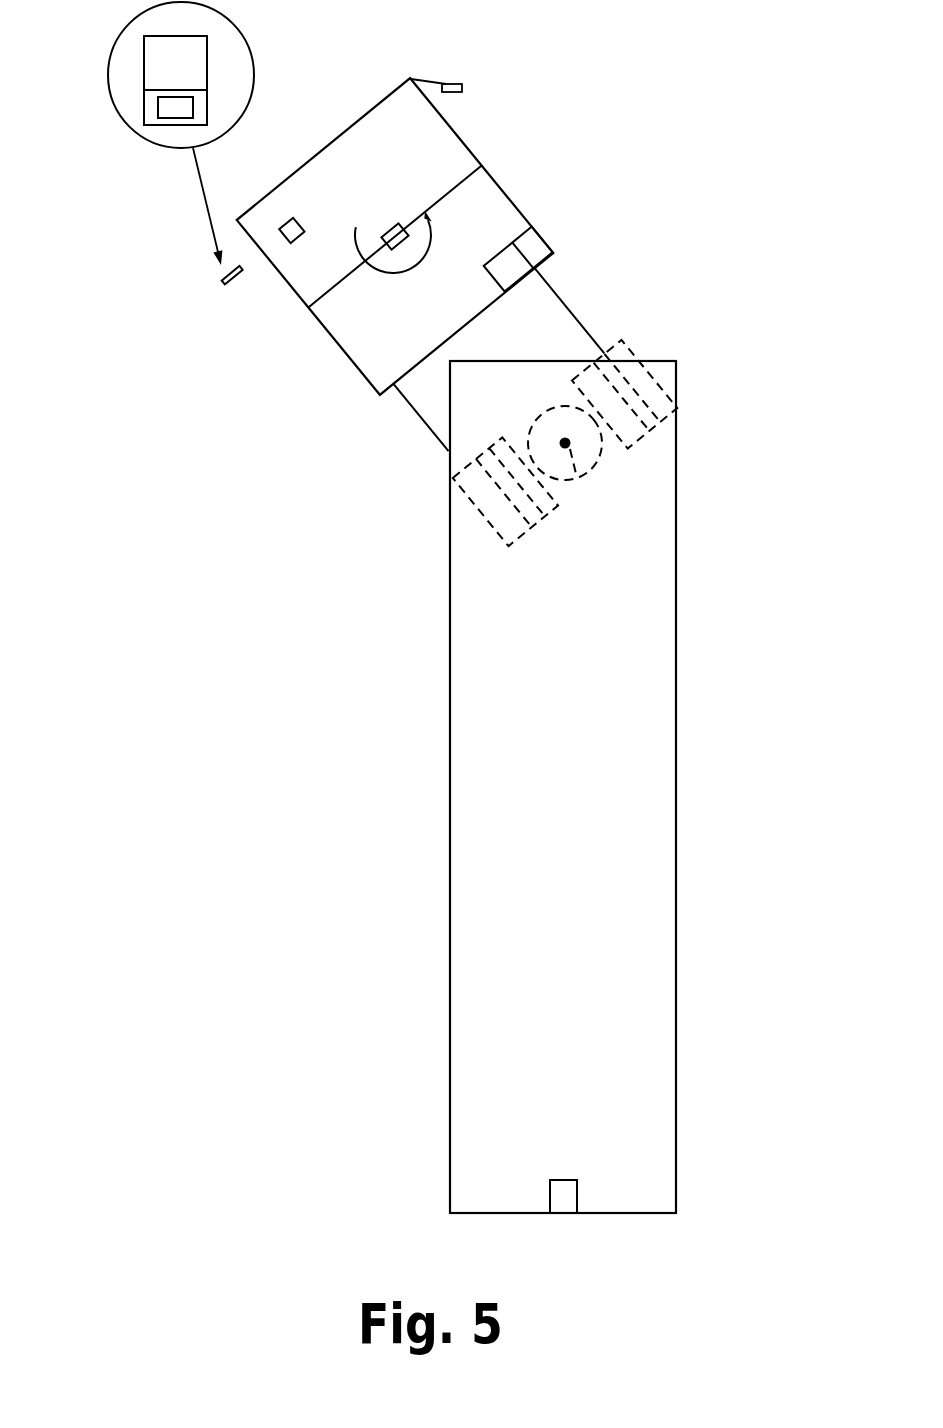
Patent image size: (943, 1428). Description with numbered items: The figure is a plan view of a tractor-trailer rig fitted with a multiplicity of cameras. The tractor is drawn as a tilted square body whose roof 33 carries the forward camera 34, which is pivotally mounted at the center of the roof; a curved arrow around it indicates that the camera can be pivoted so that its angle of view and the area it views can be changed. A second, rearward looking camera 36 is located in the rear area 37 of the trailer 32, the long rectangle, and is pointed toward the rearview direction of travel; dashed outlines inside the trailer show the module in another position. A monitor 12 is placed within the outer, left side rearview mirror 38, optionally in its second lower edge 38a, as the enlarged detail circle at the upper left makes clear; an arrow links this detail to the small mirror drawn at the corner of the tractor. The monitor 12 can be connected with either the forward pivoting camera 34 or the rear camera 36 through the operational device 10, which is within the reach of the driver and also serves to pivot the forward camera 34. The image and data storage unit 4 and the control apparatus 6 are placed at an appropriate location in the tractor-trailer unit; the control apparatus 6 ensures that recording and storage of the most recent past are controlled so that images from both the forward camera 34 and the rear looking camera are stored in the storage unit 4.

The image and data storage unit 4 is at (518, 277).
The control apparatus 6 is at (530, 243).
The operational device 10 is at (300, 227).
The monitor 12 is at (182, 110).
The trailer 32 is at (752, 435).
The roof 33 is at (358, 295).
The forward camera 34 is at (400, 222).
The rearward looking camera 36 is at (568, 1182).
The rear area 37 is at (648, 1192).
The outer left side rearview mirror 38 is at (207, 65).
The second lower edge 38a is at (157, 107).